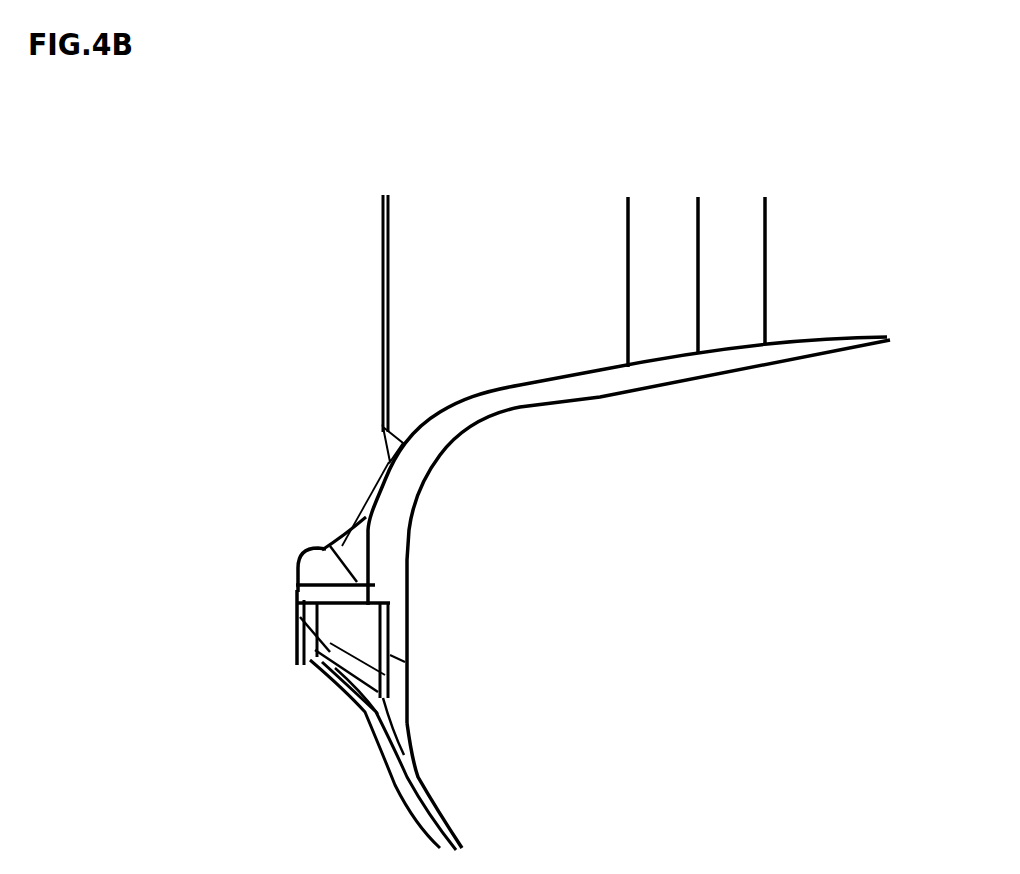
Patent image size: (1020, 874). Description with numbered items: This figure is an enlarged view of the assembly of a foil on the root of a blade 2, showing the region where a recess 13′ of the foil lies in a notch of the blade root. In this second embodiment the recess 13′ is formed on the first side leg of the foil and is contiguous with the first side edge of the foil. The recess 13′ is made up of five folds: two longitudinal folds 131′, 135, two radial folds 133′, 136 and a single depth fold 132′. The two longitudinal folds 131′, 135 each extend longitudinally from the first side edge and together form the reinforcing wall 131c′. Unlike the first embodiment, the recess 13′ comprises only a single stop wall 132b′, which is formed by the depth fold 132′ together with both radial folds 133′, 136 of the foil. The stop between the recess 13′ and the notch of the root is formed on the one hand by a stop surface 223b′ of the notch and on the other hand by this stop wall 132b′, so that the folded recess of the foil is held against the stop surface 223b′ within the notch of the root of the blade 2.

The blade 2 is at (323, 322).
The recess 13′ is at (361, 625).
The longitudinal fold 131′ is at (405, 662).
The reinforcing wall 131c′ is at (410, 730).
The depth fold 132′ is at (405, 632).
The stop wall 132b′ is at (360, 625).
The radial fold 133′ is at (405, 595).
The longitudinal fold 135 is at (307, 673).
The radial fold 136 is at (300, 600).
The stop surface 223b′ is at (310, 577).